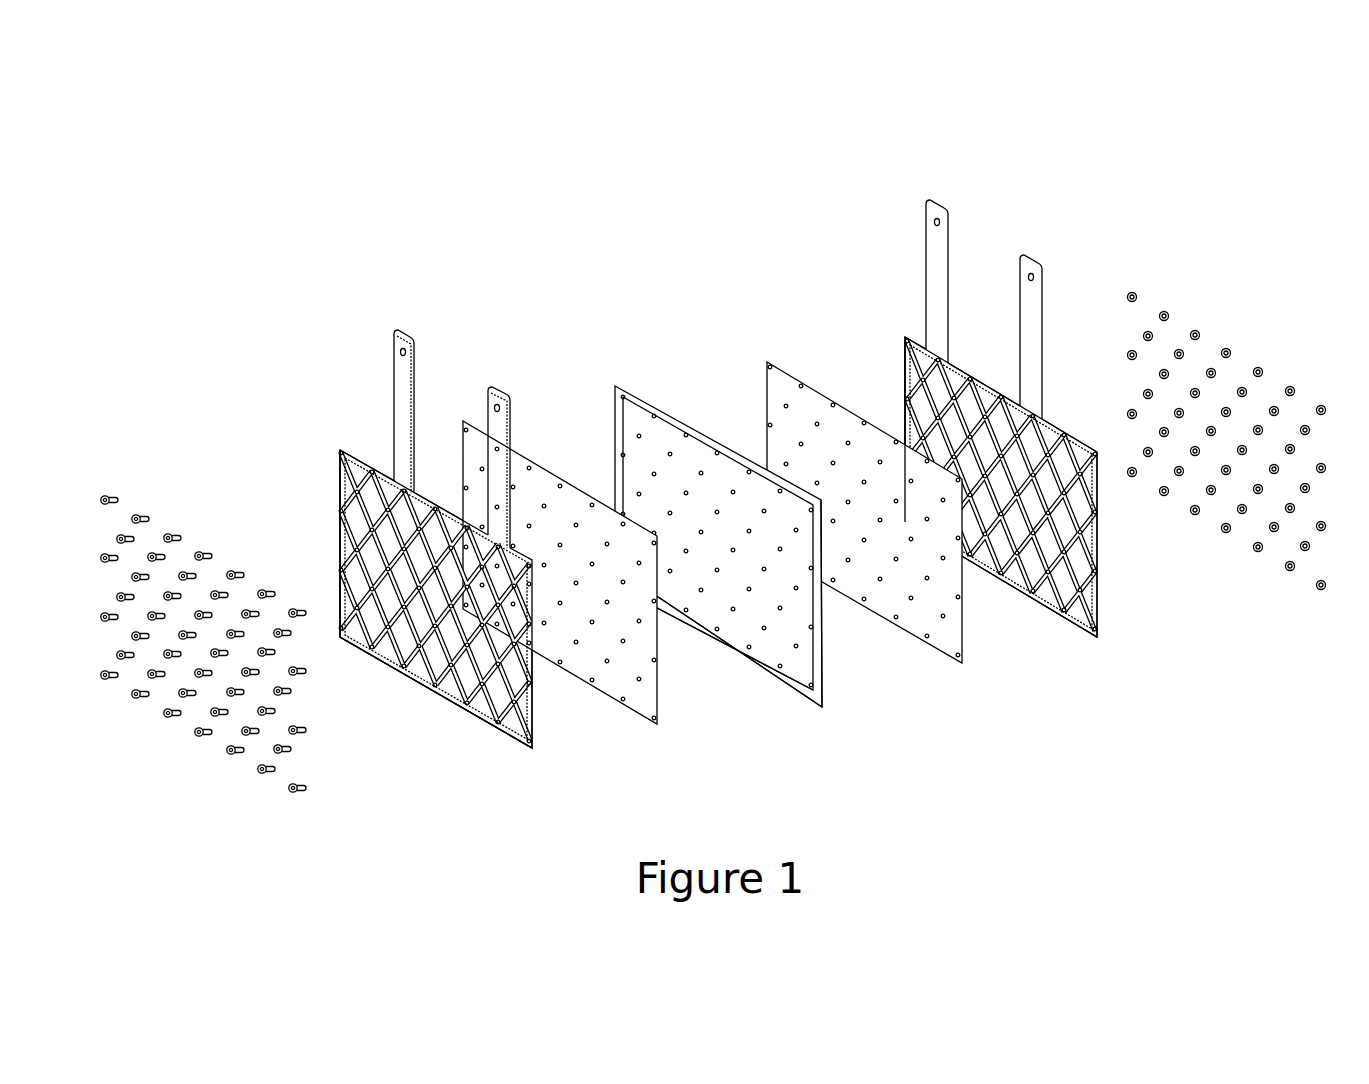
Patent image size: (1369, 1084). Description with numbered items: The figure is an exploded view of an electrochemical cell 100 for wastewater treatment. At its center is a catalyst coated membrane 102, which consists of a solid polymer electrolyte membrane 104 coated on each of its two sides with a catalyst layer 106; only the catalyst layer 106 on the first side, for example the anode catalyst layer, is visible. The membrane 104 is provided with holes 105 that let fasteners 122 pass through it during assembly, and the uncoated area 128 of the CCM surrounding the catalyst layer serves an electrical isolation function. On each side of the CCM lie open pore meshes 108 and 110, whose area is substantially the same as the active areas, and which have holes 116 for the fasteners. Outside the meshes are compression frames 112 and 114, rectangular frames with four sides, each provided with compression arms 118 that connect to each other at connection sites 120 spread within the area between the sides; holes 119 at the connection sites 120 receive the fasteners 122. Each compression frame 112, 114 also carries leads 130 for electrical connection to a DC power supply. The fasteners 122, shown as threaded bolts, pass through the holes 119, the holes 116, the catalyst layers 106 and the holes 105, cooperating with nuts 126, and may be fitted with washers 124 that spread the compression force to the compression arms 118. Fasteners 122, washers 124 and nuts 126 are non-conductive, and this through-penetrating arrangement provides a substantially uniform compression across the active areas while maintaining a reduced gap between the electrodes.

The electrochemical cell 100 is at (1116, 180).
The catalyst coated membrane 102 is at (831, 688).
The solid polymer electrolyte membrane 104 is at (757, 502).
The holes 105 is at (703, 477).
The catalyst layer 106 is at (747, 617).
The open pore mesh 108 is at (560, 519).
The open pore mesh 110 is at (968, 640).
The compression frame 112 is at (449, 640).
The compression frame 114 is at (1104, 611).
The holes 116 is at (577, 525).
The compression arms 118 is at (350, 572).
The holes 119 is at (510, 737).
The connection sites 120 is at (437, 633).
The fasteners 122 is at (137, 516).
The washers 124 is at (102, 496).
The nuts 126 is at (1262, 370).
The area 128 is at (795, 685).
The leads 130 is at (492, 385).